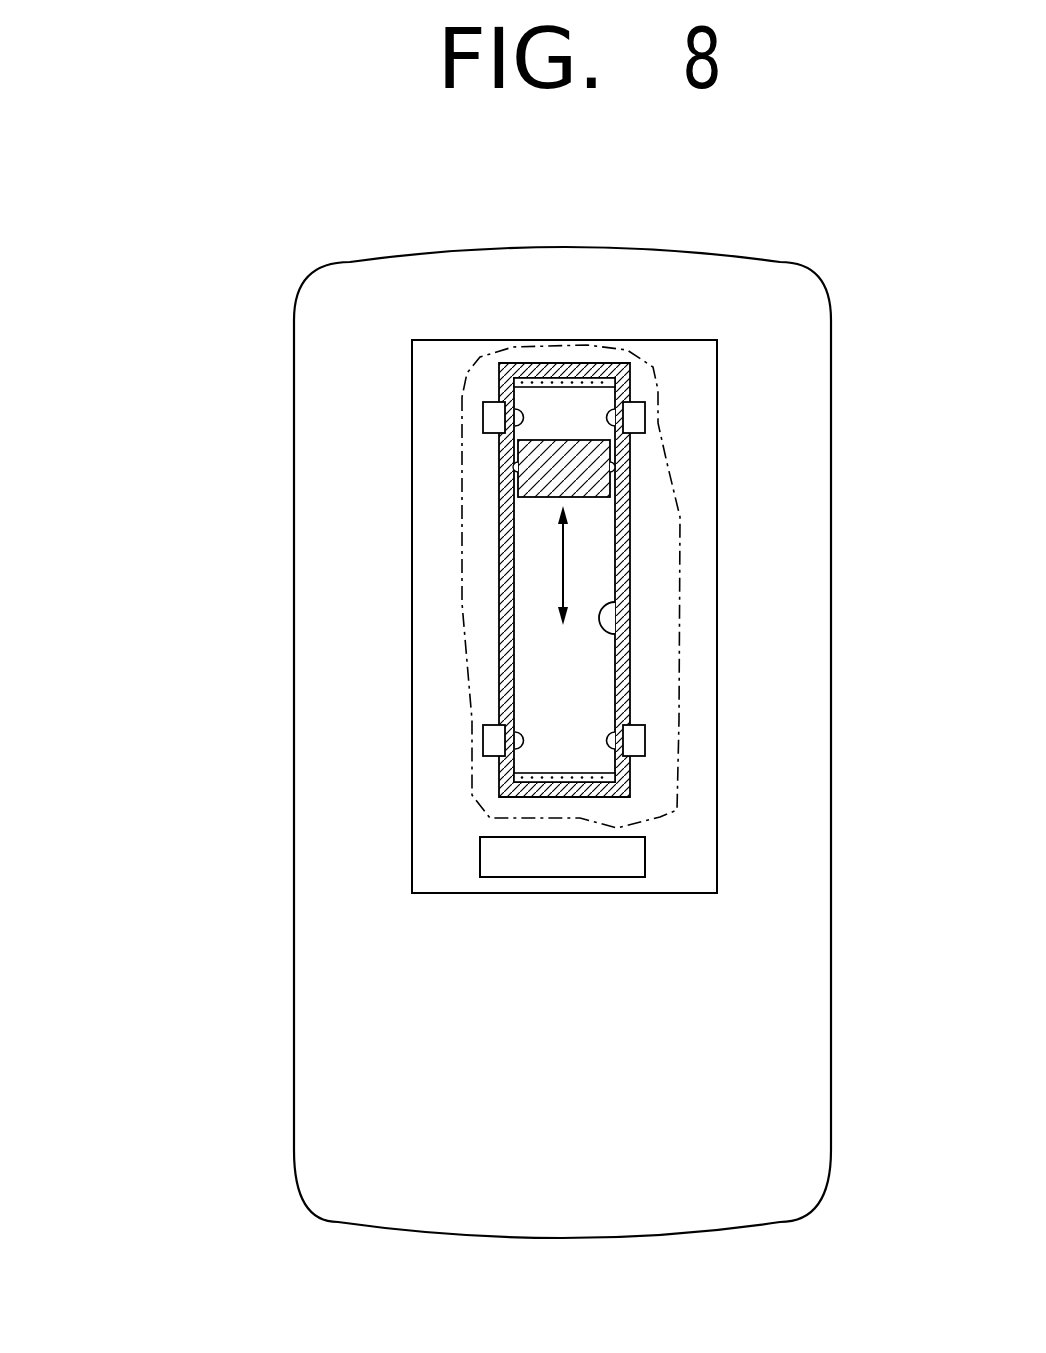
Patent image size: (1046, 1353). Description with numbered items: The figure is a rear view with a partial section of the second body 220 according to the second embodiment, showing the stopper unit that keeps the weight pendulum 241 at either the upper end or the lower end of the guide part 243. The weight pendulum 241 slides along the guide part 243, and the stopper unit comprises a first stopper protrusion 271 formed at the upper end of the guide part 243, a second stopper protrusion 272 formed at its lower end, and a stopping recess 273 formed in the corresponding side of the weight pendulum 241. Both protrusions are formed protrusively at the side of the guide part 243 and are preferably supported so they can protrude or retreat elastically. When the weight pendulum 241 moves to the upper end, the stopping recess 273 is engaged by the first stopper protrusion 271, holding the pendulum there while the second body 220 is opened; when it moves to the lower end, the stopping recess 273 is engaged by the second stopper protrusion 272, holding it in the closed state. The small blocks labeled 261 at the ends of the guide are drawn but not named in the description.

The second body 220 is at (262, 922).
The weight pendulum 241 is at (590, 487).
The guide part 243 is at (612, 634).
The fixing bolt 261 is at (637, 403).
The first stopper protrusion 271 is at (483, 420).
The second stopper protrusion 272 is at (483, 742).
The stopping recess 273 is at (608, 467).